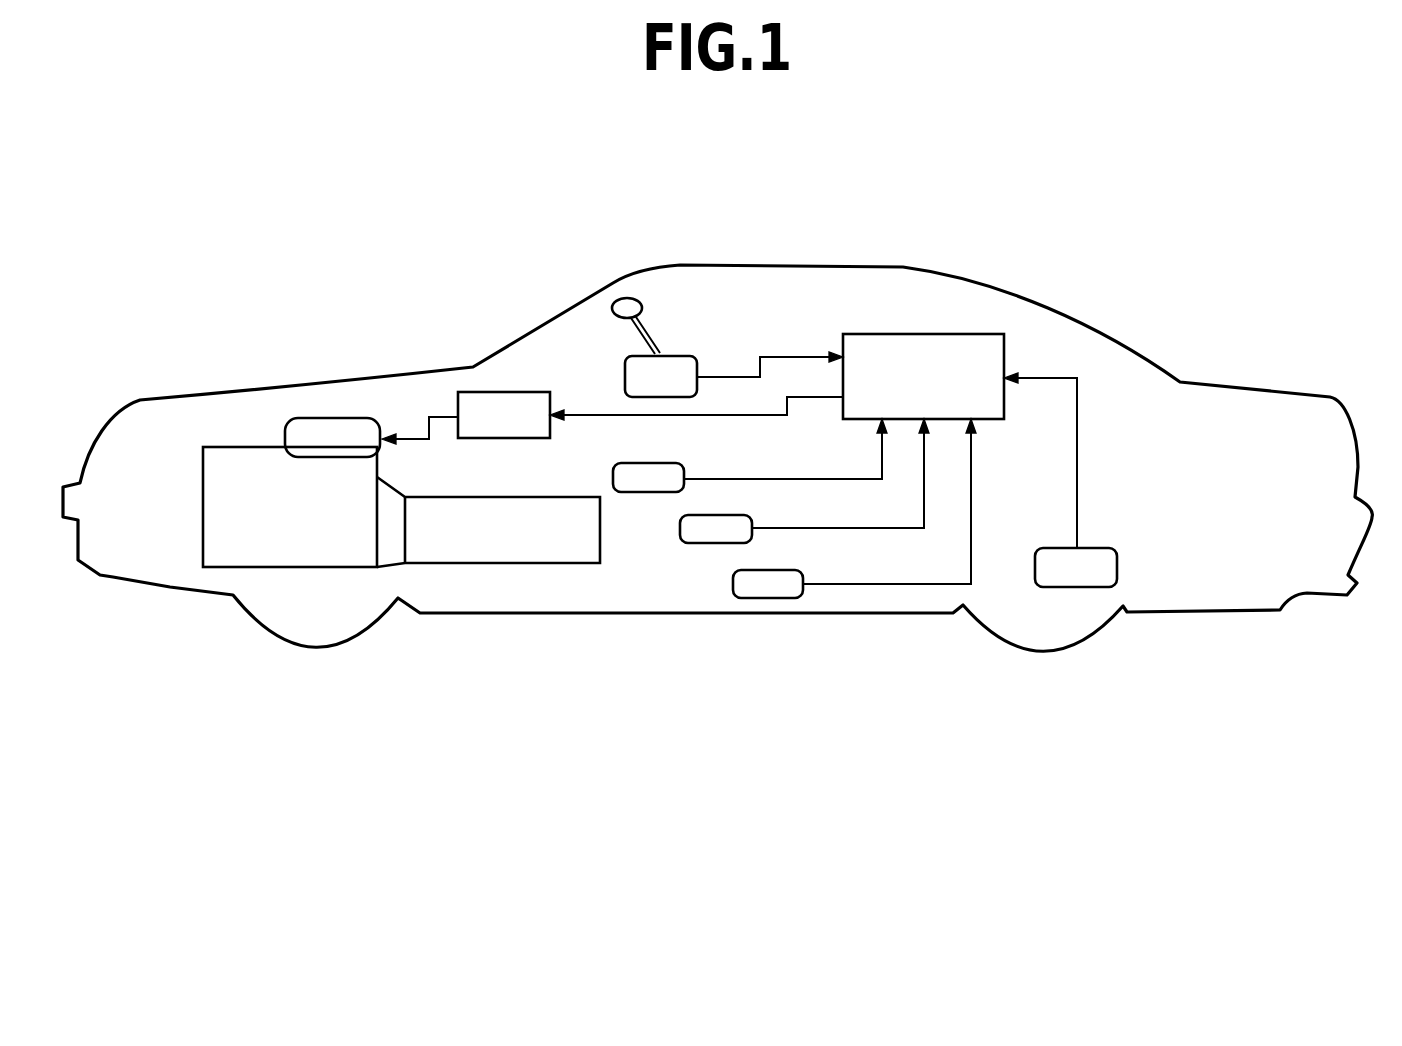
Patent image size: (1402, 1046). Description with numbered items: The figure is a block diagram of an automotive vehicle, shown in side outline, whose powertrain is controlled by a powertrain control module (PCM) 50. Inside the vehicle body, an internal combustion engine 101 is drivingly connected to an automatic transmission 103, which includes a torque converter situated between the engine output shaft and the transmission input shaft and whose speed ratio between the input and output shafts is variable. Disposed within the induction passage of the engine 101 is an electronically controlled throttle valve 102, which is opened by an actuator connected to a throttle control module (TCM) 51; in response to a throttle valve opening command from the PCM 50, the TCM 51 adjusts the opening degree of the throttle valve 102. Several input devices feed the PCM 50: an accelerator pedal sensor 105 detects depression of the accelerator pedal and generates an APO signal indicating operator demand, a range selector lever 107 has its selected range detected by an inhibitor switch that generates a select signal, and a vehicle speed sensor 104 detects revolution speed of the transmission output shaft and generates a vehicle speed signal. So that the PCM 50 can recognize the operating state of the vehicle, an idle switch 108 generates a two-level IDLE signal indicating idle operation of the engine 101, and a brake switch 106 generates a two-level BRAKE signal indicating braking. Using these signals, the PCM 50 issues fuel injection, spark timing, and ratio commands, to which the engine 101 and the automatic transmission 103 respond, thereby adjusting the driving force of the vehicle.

The powertrain control module (PCM) 50 is at (913, 334).
The throttle control module (TCM) 51 is at (493, 392).
The internal combustion engine 101 is at (234, 567).
The electronically controlled throttle valve 102 is at (333, 418).
The automatic transmission 103 is at (483, 563).
The vehicle speed sensor 104 is at (1078, 587).
The accelerator pedal sensor 105 is at (778, 598).
The brake switch 106 is at (708, 543).
The range selector lever 107 is at (624, 298).
The idle switch 108 is at (643, 492).